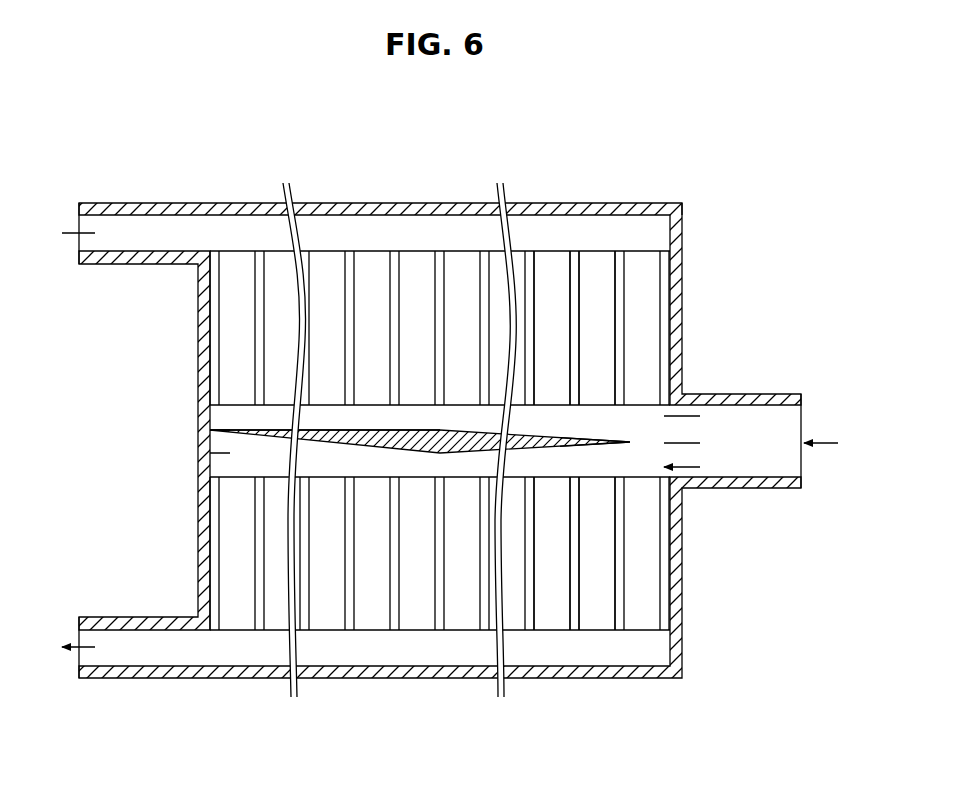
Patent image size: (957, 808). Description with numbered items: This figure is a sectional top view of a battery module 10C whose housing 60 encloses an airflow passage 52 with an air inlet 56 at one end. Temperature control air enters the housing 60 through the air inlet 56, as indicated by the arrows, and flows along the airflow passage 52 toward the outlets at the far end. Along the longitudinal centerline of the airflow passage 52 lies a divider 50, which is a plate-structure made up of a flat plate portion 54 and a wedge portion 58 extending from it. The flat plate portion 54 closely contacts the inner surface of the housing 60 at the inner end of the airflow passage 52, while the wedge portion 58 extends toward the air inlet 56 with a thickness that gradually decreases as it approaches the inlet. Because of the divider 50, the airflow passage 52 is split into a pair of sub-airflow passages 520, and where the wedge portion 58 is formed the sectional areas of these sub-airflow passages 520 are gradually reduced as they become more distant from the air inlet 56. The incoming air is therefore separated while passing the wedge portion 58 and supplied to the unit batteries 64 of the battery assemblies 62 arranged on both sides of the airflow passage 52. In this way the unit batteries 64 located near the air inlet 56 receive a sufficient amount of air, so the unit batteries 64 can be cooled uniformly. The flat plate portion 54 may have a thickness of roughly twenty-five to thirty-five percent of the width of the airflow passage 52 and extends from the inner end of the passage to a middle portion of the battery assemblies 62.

The heat exchanger 10C is at (754, 235).
The divider 50 is at (420, 420).
The airflow passage 52 is at (557, 470).
The flat plate portion 54 is at (372, 430).
The air inlet 56 is at (802, 466).
The wedge portion 58 is at (574, 437).
The housing 60 is at (676, 198).
The battery assemblies 62 is at (598, 280).
The unit batteries 64 is at (548, 290).
The sub-airflow passages 520 is at (204, 463).